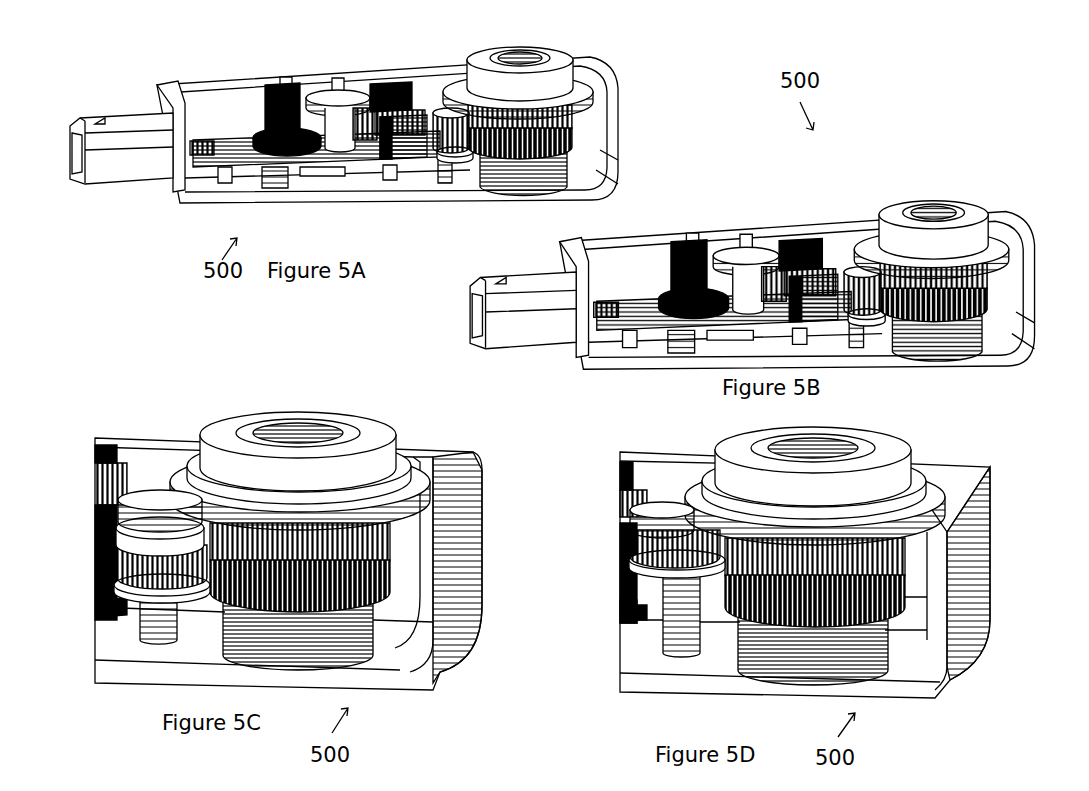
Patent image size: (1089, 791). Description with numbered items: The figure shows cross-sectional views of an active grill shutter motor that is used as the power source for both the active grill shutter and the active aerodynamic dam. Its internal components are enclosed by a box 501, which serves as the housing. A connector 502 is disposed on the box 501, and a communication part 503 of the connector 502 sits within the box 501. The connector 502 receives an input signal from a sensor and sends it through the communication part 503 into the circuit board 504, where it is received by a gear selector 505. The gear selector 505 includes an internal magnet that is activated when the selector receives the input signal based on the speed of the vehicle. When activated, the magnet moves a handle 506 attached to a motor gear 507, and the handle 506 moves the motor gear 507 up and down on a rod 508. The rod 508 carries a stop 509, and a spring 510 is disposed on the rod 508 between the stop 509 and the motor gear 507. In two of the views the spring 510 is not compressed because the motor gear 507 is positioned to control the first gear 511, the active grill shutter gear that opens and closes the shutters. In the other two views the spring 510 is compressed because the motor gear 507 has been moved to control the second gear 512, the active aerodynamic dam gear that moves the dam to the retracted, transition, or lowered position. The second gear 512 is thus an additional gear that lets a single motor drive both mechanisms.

In FIG. 5A, the box 501 is at (165, 108).
In FIG. 5B, the box 501 is at (622, 245).
In FIG. 5C, the box 501 is at (132, 450).
In FIG. 5D, the box 501 is at (960, 597).
In FIG. 5A, the connector 502 is at (130, 163).
In FIG. 5B, the connector 502 is at (522, 317).
In FIG. 5A, the communication part 503 is at (208, 148).
In FIG. 5B, the communication part 503 is at (602, 305).
In FIG. 5A, the circuit board 504 is at (237, 152).
In FIG. 5B, the circuit board 504 is at (637, 320).
In FIG. 5A, the gear selector 505 is at (407, 143).
In FIG. 5B, the gear selector 505 is at (767, 257).
In FIG. 5C, the gear selector 505 is at (108, 590).
In FIG. 5D, the gear selector 505 is at (620, 610).
In FIG. 5C, the handle 506 is at (100, 600).
In FIG. 5D, the handle 506 is at (630, 570).
In FIG. 5A, the motor gear 507 is at (455, 152).
In FIG. 5B, the motor gear 507 is at (840, 263).
In FIG. 5C, the motor gear 507 is at (187, 575).
In FIG. 5D, the motor gear 507 is at (693, 540).
In FIG. 5A, the rod 508 is at (443, 170).
In FIG. 5B, the rod 508 is at (850, 330).
In FIG. 5C, the rod 508 is at (160, 603).
In FIG. 5D, the rod 508 is at (680, 630).
In FIG. 5A, the stop 509 is at (448, 118).
In FIG. 5B, the stop 509 is at (850, 257).
In FIG. 5C, the stop 509 is at (148, 493).
In FIG. 5D, the stop 509 is at (623, 497).
In FIG. 5A, the spring 510 is at (443, 120).
In FIG. 5B, the spring 510 is at (749, 280).
In FIG. 5C, the spring 510 is at (130, 527).
In FIG. 5A, the first gear 511 is at (560, 160).
In FIG. 5B, the first gear 511 is at (980, 280).
In FIG. 5C, the first gear 511 is at (340, 637).
In FIG. 5D, the first gear 511 is at (870, 657).
In FIG. 5A, the second gear 512 is at (540, 77).
In FIG. 5B, the second gear 512 is at (920, 233).
In FIG. 5C, the second gear 512 is at (357, 470).
In FIG. 5D, the second gear 512 is at (873, 487).